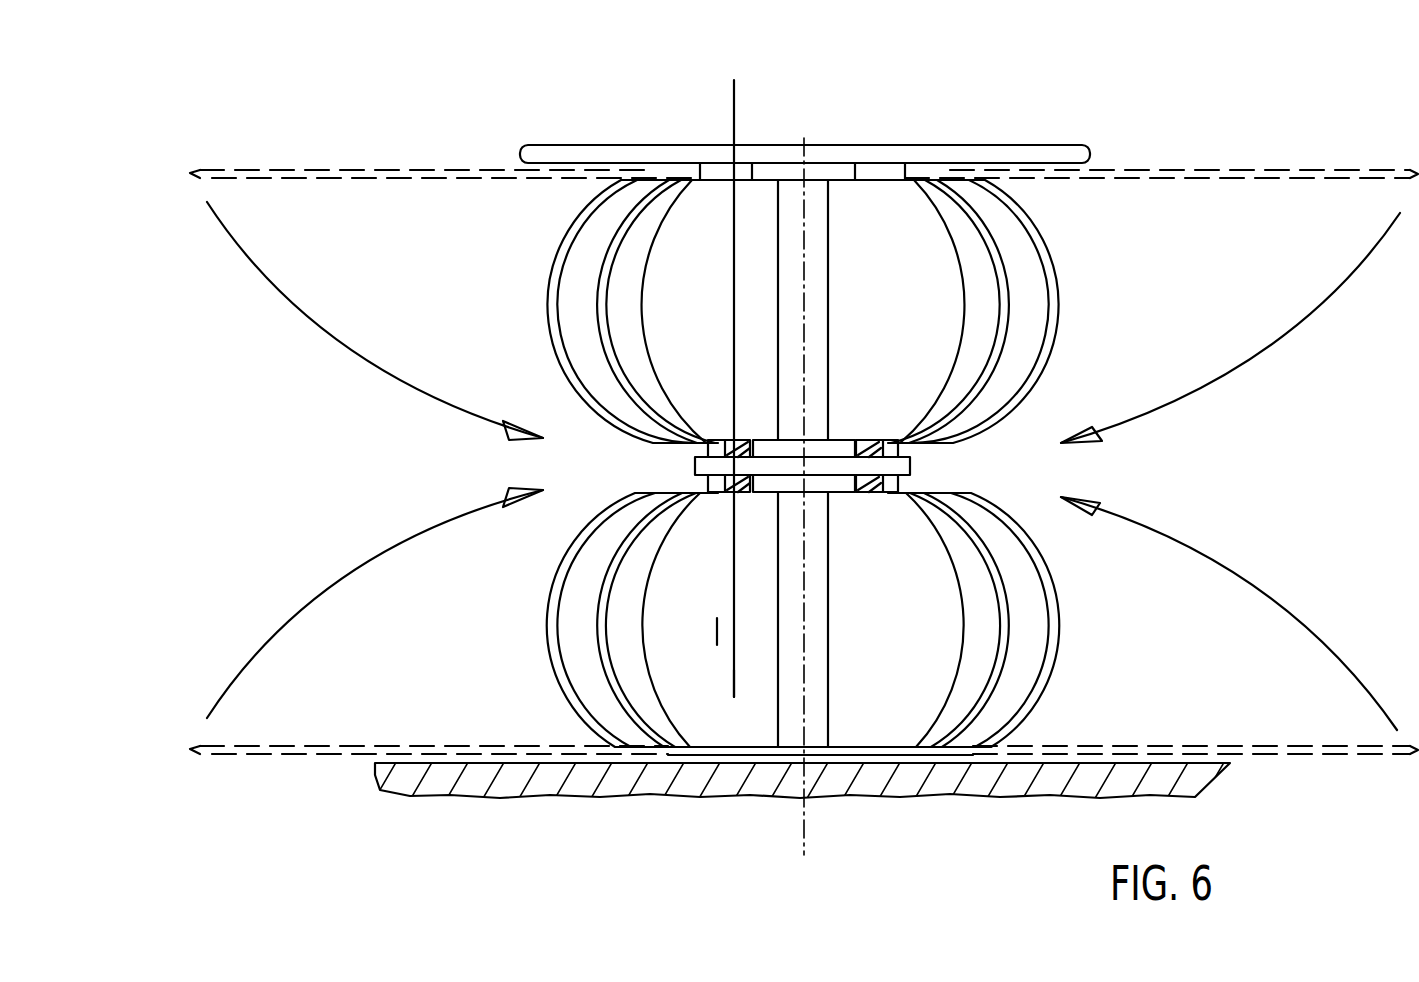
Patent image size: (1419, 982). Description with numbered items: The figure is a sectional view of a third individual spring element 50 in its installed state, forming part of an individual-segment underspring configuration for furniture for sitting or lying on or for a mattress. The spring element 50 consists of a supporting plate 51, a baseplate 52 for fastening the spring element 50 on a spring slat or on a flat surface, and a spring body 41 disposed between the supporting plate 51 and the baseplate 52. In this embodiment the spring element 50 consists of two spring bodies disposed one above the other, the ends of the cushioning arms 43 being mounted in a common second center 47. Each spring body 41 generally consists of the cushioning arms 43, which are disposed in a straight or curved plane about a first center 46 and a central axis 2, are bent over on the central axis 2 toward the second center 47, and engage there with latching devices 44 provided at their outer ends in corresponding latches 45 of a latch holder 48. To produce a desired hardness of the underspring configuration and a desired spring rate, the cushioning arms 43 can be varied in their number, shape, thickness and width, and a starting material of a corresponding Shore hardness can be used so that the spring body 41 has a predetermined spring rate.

The central axis 2 is at (806, 523).
The spring body 41 is at (500, 289).
The cushioning arms 43 is at (663, 217).
The latching devices 44 is at (734, 697).
The latches 45 is at (717, 645).
The first center 46 is at (838, 213).
The second center 47 is at (990, 469).
The latch holder 48 is at (750, 493).
The individual spring element 50 is at (805, 108).
The supporting plate 51 is at (943, 147).
The baseplate 52 is at (738, 362).